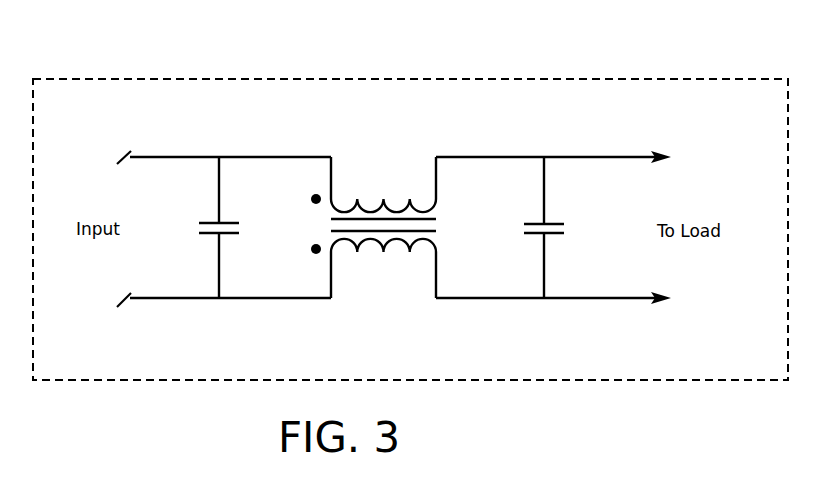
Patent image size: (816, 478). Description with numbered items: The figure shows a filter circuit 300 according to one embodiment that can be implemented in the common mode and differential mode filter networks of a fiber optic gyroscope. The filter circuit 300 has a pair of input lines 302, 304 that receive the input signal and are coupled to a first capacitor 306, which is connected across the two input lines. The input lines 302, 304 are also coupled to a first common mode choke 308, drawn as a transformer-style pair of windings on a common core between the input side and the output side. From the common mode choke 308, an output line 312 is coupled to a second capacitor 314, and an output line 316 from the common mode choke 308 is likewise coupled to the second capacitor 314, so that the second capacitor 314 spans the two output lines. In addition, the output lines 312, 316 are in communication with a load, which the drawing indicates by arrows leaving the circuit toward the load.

The filter circuit 300 is at (454, 76).
The input line 302 is at (138, 156).
The input line 304 is at (150, 299).
The first capacitor 306 is at (225, 222).
The first common mode choke 308 is at (332, 173).
The output line 312 is at (468, 156).
The second capacitor 314 is at (551, 223).
The output line 316 is at (462, 299).